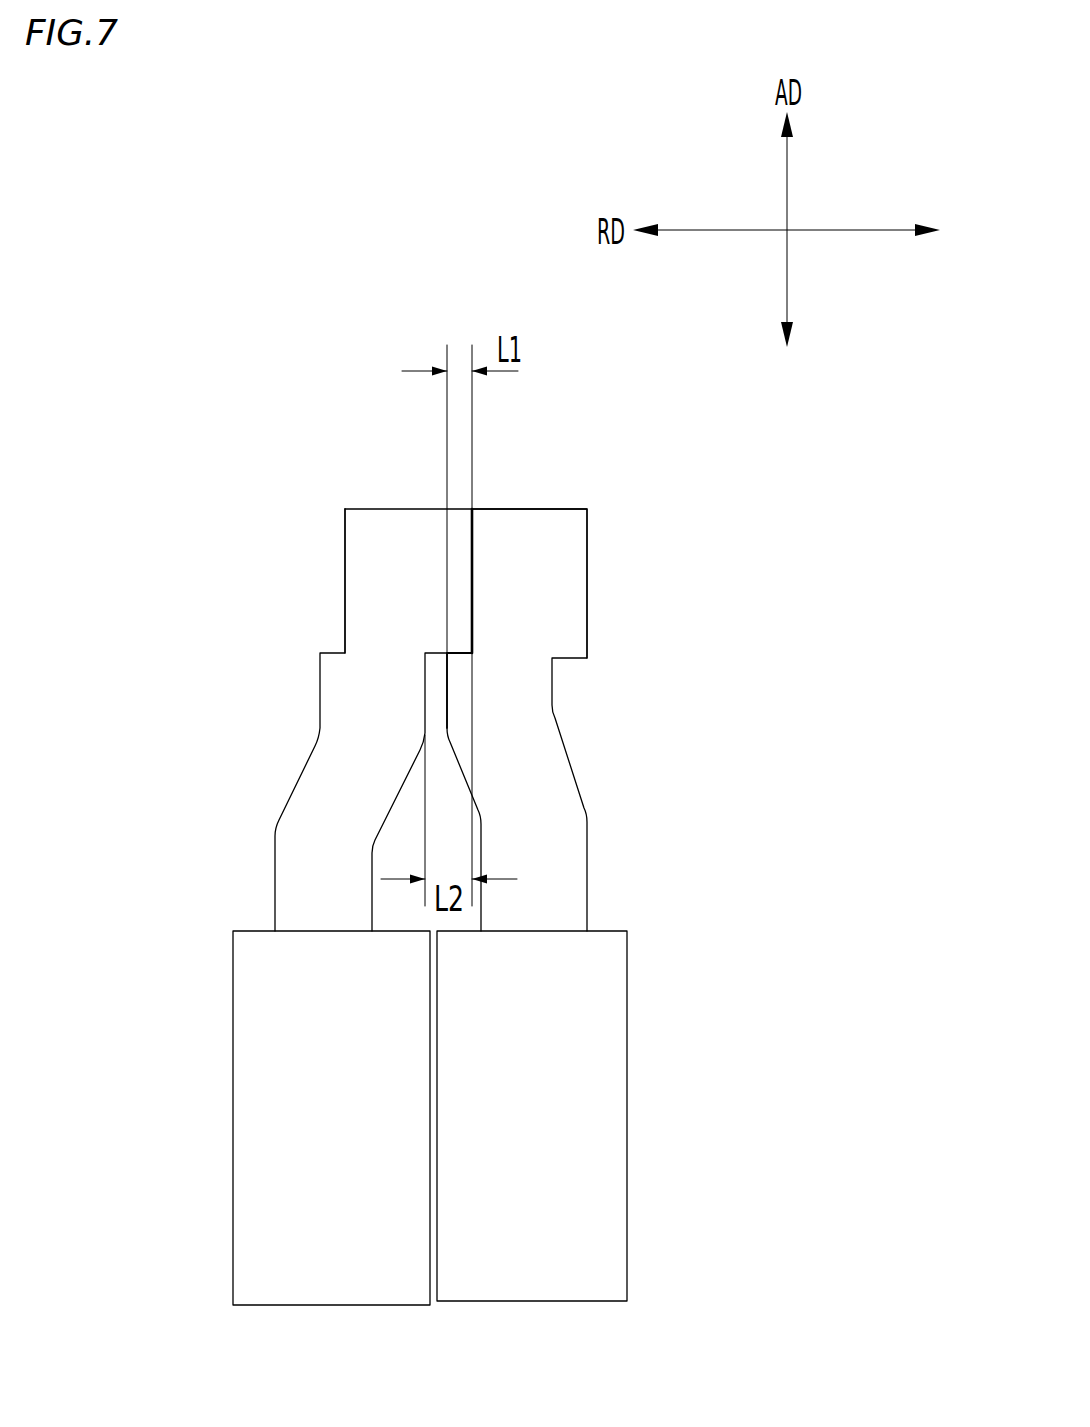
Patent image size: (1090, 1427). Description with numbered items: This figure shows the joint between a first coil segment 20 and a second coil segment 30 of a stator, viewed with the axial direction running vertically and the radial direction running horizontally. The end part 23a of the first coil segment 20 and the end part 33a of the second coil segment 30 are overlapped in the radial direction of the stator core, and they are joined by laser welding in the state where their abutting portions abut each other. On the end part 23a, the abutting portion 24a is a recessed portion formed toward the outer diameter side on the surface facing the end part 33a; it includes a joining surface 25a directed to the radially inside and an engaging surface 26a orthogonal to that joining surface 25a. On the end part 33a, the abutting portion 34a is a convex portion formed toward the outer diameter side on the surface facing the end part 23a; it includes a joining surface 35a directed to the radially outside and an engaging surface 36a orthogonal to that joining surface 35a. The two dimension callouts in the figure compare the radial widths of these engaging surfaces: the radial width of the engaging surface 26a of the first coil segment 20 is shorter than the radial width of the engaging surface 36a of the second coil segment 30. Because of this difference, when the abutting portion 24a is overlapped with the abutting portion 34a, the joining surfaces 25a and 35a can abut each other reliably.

The first coil segment 20 is at (545, 899).
The second coil segment 30 is at (295, 874).
The end part of the first coil segment 23a is at (567, 535).
The abutting portion of the first coil segment 24a is at (330, 431).
The joining surface of the first coil segment 25a is at (468, 543).
The engaging surface of the first coil segment 26a is at (468, 648).
The end part of the second coil segment 33a is at (358, 615).
The abutting portion of the second coil segment 34a is at (770, 595).
The joining surface of the second coil segment 35a is at (477, 575).
The engaging surface of the second coil segment 36a is at (433, 657).